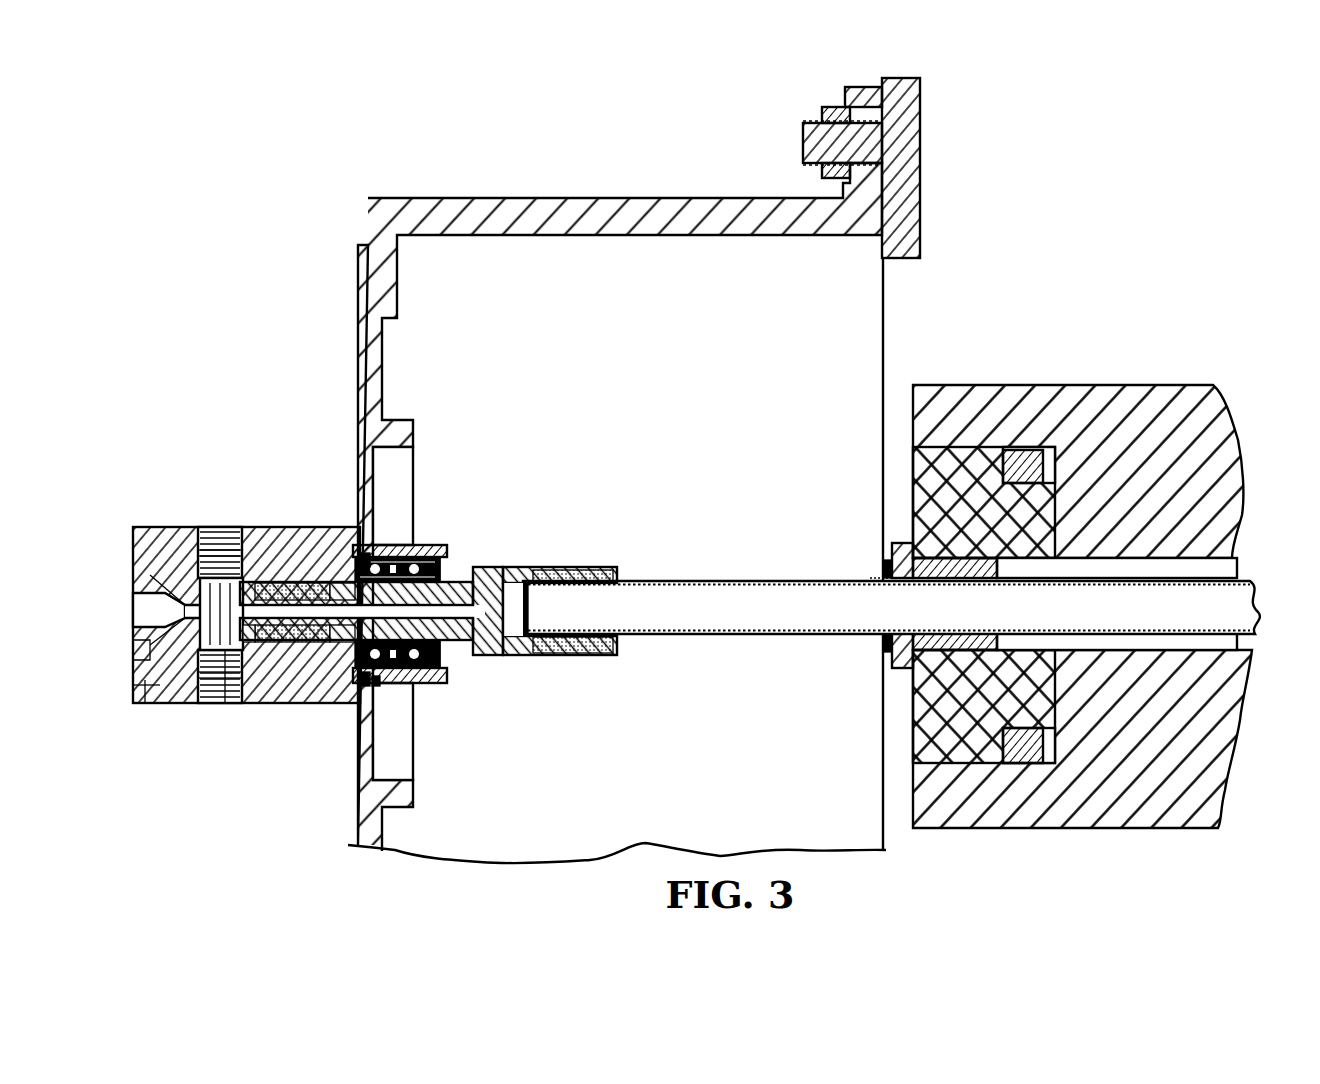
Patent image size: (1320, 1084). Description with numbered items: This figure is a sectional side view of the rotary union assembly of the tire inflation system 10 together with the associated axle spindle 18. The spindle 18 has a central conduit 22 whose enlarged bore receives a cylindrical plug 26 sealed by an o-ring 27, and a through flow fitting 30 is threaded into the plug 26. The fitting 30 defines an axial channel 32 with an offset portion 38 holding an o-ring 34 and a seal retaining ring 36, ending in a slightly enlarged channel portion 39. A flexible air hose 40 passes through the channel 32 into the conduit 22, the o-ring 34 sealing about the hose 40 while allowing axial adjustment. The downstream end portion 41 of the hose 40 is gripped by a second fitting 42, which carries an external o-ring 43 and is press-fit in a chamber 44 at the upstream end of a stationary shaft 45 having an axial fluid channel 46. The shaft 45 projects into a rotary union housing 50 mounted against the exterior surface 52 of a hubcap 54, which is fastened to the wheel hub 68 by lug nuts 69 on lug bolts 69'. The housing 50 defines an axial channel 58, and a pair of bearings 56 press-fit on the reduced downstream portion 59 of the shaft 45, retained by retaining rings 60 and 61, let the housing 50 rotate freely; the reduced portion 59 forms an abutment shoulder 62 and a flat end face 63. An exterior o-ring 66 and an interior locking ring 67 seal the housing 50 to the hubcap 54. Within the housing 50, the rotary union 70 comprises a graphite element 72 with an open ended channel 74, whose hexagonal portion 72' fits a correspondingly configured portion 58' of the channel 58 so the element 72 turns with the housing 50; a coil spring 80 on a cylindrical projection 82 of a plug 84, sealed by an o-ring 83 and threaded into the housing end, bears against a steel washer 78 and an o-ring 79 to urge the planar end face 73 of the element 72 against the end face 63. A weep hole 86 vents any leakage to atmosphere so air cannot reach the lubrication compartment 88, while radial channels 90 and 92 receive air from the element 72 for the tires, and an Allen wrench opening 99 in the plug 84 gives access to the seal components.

The drive assembly 10 is at (643, 536).
The axle spindle 18 is at (1128, 385).
The conduit 22 is at (1228, 567).
The cylindrical plug 26 is at (913, 450).
The o-ring 27 is at (1018, 450).
The through flow fitting 30 is at (895, 548).
The axial channel 32 is at (858, 605).
The o-ring 34 is at (893, 665).
The seal retaining ring 36 is at (890, 650).
The offset portion 38 is at (890, 568).
The enlarged channel portion 39 is at (880, 576).
The flexible air hose 40 is at (720, 581).
The downstream end portion 41 is at (561, 655).
The second fitting 42 is at (610, 570).
The o-ring 43 is at (592, 656).
The chamber 44 is at (512, 585).
The stationary shaft 45 is at (503, 567).
The fluid channel 46 is at (495, 628).
The rotary union housing 50 is at (140, 527).
The exterior surface 52 is at (358, 275).
The hubcap 54 is at (600, 198).
The bearings 56 is at (400, 548).
The channel 58 is at (206, 527).
The correspondingly configured portion 58' is at (245, 708).
The downstream portion 59 is at (412, 554).
The retaining ring 60 is at (440, 548).
The retaining ring 61 is at (345, 690).
The bearings abutment shoulder 62 is at (458, 582).
The end face 63 is at (285, 585).
The exterior o-ring 66 is at (352, 566).
The interior locking ring 67 is at (380, 690).
The wheel hub 68 is at (920, 240).
The wheel lug nuts 69 is at (831, 123).
The lug bolts 69' is at (811, 139).
The rotary union 70 is at (290, 575).
The graphite element 72 is at (292, 709).
The hexagonal portion 72' is at (234, 709).
The upstream planar end face 73 is at (322, 703).
The open ended channel 74 is at (230, 590).
The steel washer 78 is at (220, 583).
The o-ring 79 is at (225, 703).
The coil spring 80 is at (150, 703).
The cylindrical projection 82 is at (155, 582).
The o-ring 83 is at (140, 692).
The plug 84 is at (133, 655).
The weep hole 86 is at (348, 578).
The lubrication compartment 88 is at (500, 402).
The radial channel 90 is at (203, 703).
The radial channel 92 is at (214, 527).
The Allen wrench opening 99 is at (140, 610).